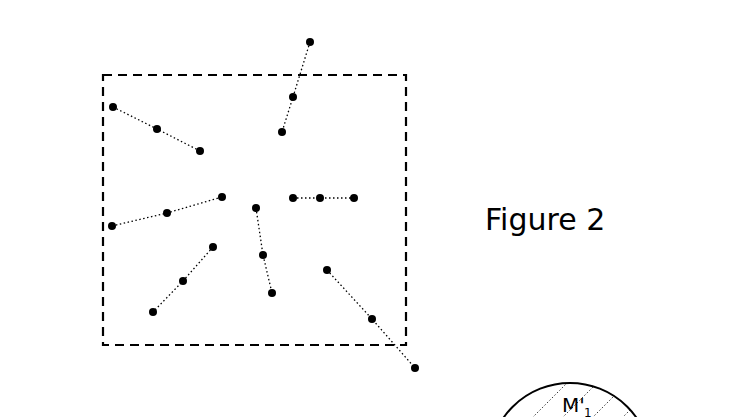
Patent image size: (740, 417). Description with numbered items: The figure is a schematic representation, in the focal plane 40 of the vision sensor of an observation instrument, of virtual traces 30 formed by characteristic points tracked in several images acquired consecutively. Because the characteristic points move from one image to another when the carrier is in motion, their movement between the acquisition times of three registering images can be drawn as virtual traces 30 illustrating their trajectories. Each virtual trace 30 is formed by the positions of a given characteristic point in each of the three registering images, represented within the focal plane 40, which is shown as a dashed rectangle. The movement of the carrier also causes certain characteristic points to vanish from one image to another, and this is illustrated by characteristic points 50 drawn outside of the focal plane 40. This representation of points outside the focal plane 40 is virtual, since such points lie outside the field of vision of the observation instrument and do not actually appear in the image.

The virtual trace 30 is at (135, 118).
The focal plane 40 is at (100, 130).
The characteristic points outside of the focal plane 50 is at (310, 42).